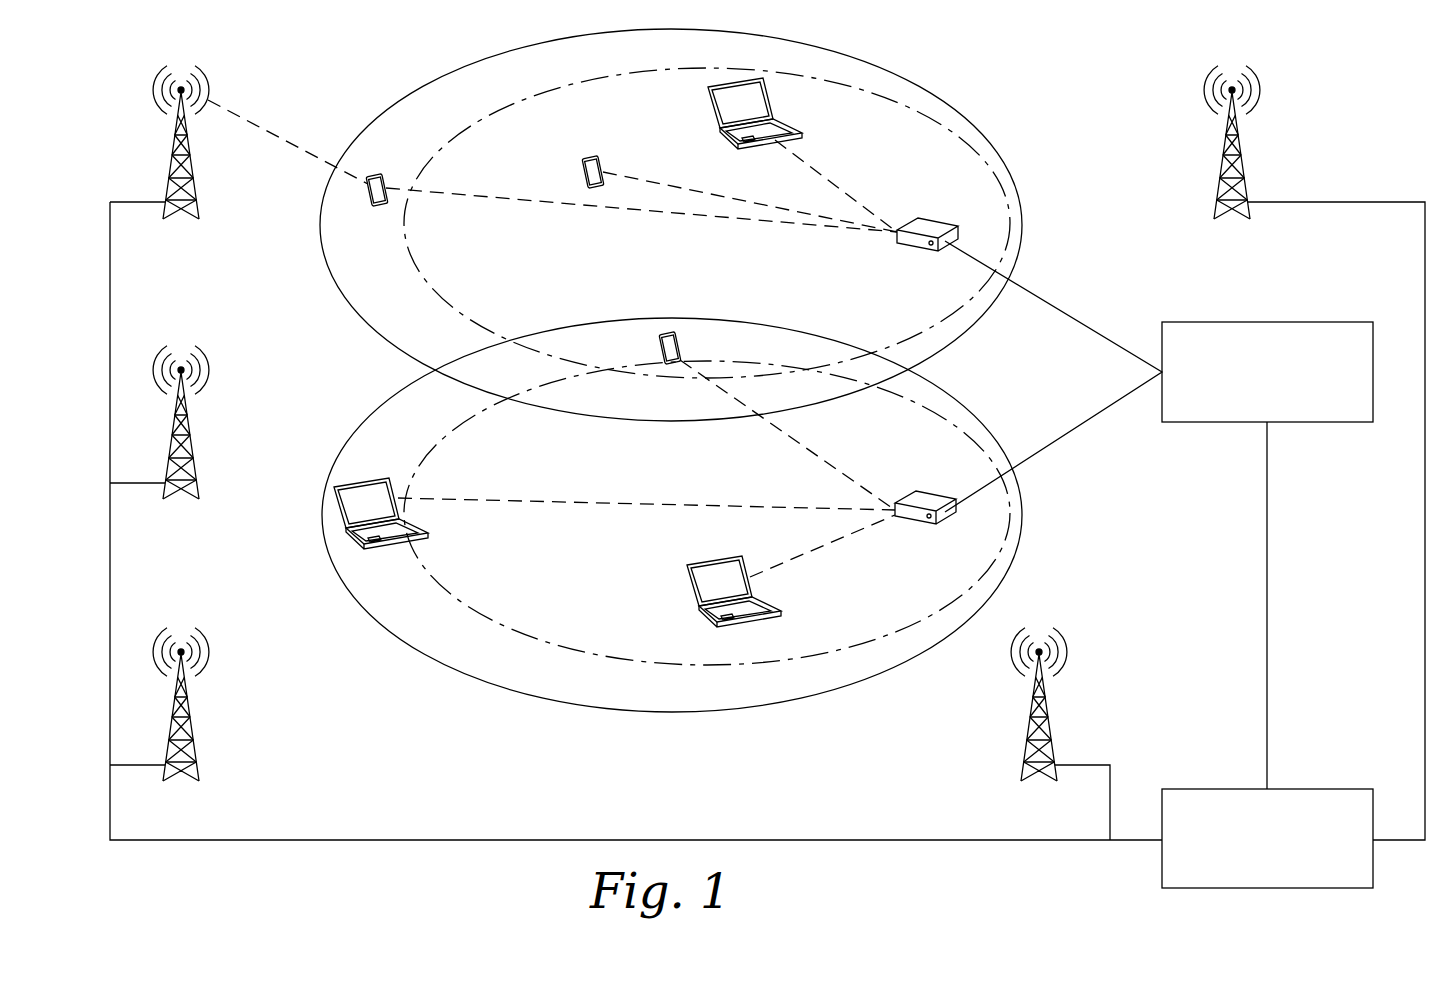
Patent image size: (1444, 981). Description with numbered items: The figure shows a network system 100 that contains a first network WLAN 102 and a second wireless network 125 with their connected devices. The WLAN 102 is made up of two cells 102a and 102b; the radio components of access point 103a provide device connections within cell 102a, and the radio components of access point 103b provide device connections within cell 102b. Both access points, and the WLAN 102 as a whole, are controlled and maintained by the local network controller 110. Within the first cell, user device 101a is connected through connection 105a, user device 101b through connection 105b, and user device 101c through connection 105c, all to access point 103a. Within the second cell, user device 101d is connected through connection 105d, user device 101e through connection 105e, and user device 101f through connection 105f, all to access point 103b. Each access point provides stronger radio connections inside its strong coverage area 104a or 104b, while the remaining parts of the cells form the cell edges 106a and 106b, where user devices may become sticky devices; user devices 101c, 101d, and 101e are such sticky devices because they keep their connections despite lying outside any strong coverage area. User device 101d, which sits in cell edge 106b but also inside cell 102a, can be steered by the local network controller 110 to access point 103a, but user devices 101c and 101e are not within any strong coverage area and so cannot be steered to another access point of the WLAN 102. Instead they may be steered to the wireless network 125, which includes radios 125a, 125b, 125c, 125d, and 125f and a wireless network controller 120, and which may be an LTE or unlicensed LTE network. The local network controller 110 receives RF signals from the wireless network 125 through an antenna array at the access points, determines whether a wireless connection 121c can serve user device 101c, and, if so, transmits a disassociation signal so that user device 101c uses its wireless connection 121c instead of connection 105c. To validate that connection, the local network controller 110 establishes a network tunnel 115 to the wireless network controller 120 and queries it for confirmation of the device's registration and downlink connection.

The network system 100 is at (1328, 91).
The user device 101a is at (708, 96).
The user device 101b is at (583, 172).
The user device 101c is at (378, 206).
The user device 101d is at (656, 350).
The user device 101e is at (378, 550).
The user device 101f is at (686, 578).
The first network WLAN 102 is at (989, 376).
The cell 102a is at (652, 225).
The cell 102b is at (651, 515).
The access point 103a is at (915, 251).
The access point 103b is at (912, 536).
The strong coverage area 104a is at (488, 328).
The strong coverage area 104b is at (513, 620).
The connection 105a is at (818, 172).
The connection 105b is at (668, 184).
The connection 105c is at (625, 212).
The connection 105d is at (820, 460).
The connection 105e is at (540, 496).
The connection 105f is at (805, 558).
The cell edge 106a is at (480, 63).
The cell edge 106b is at (395, 392).
The local network controller 110 is at (1295, 322).
The network tunnel 115 is at (1269, 602).
The wireless network controller 120 is at (1293, 889).
The wireless connection 121c is at (263, 125).
The wireless network 125 is at (335, 841).
The radio 125a is at (195, 176).
The radio 125b is at (194, 456).
The radio 125c is at (194, 738).
The radio 125d is at (1024, 744).
The radio 125f is at (1218, 176).